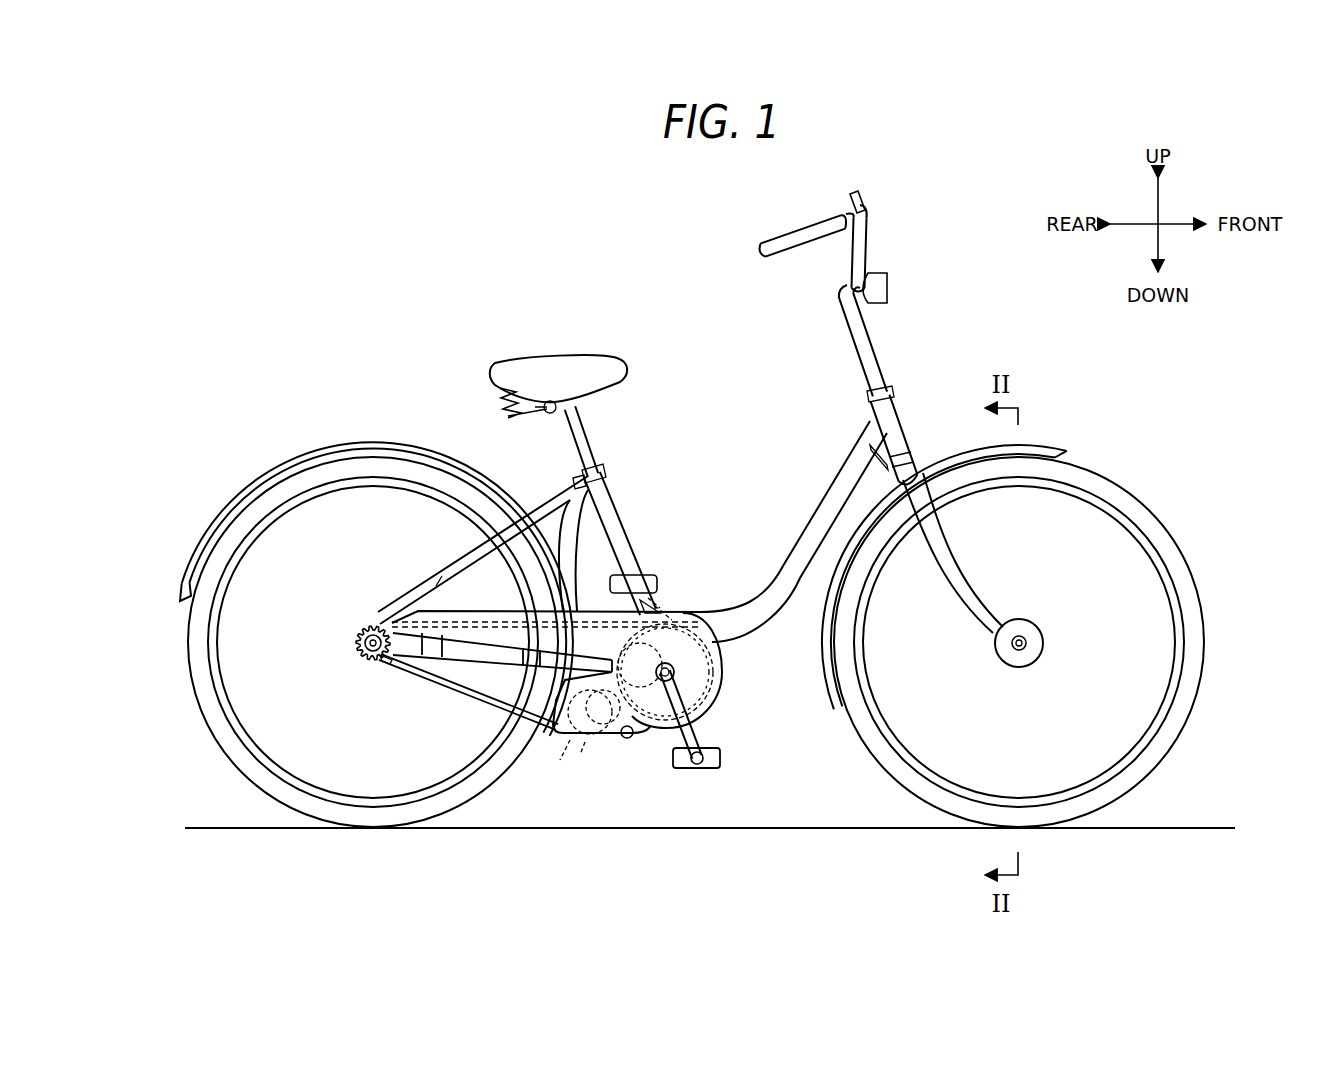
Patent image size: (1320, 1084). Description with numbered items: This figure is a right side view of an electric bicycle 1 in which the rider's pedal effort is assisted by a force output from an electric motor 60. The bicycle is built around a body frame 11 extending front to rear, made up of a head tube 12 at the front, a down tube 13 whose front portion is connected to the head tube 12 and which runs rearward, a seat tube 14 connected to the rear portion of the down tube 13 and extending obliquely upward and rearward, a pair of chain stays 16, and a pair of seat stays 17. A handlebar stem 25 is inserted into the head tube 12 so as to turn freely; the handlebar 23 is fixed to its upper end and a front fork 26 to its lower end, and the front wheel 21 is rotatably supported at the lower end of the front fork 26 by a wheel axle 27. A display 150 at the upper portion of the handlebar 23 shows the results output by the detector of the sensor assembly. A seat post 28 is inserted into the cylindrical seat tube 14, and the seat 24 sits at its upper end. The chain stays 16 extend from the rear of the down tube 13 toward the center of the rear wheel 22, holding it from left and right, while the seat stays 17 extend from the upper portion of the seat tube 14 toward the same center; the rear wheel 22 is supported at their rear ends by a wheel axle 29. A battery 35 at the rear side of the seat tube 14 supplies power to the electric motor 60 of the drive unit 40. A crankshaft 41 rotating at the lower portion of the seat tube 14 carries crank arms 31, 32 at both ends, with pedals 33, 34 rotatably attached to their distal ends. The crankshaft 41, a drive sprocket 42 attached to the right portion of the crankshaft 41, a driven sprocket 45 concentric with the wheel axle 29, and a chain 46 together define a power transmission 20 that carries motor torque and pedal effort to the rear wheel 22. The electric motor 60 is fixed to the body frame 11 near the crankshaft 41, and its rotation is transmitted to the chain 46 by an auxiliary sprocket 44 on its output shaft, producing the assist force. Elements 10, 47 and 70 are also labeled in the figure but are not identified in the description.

The electric bicycle 1 is at (985, 260).
The front wheel 10 is at (1052, 637).
The body frame 11 is at (640, 531).
The head tube 12 is at (893, 411).
The down tube 13 is at (838, 483).
The seat tube 14 is at (605, 502).
The chain stays 16 is at (490, 656).
The seat stays 17 is at (440, 578).
The power transmission 20 is at (680, 714).
The front wheel 21 is at (1125, 498).
The rear wheel 22 is at (190, 645).
The handlebar 23 is at (876, 228).
The seat 24 is at (560, 375).
The handlebar stem 25 is at (868, 345).
The front fork 26 is at (936, 537).
The wheel axle 27 is at (1026, 628).
The seat post 28 is at (582, 437).
The wheel axle 29 is at (356, 645).
The crank arm 31 is at (700, 736).
The crank arm 32 is at (660, 605).
The pedal 33 is at (720, 758).
The pedal 34 is at (650, 578).
The battery 35 is at (595, 550).
The drive unit 40 is at (740, 690).
The crankshaft 41 is at (680, 670).
The drive sprocket 42 is at (612, 663).
The auxiliary sprocket 44 is at (588, 745).
The driven sprocket 45 is at (388, 668).
The chain 46 is at (440, 690).
The front hub 47 is at (1025, 662).
The electric motor 60 is at (612, 735).
The bell 70 is at (888, 287).
The display 150 is at (860, 190).